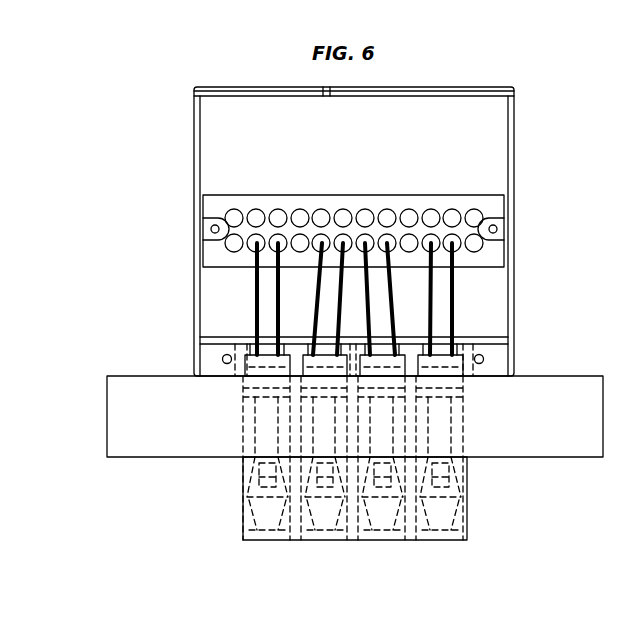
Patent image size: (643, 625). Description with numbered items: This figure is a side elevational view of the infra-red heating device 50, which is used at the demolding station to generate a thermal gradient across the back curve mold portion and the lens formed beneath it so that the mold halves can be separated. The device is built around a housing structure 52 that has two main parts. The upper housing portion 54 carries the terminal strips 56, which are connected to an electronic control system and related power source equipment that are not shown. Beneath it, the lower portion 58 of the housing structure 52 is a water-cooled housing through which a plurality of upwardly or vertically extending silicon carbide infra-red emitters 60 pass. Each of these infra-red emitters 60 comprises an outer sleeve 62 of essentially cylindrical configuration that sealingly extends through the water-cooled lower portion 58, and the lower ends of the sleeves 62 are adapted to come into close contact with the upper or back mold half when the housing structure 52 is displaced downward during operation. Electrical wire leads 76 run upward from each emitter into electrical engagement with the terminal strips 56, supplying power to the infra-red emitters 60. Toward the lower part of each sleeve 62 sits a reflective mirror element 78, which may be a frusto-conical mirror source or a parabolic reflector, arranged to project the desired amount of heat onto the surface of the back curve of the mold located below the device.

The infra-red heating device 50 is at (482, 78).
The housing structure 52 is at (514, 270).
The upper housing portion 54 is at (226, 87).
The terminal strips 56 is at (226, 244).
The lower portion 58 is at (108, 376).
The silicon carbide infra-red emitters 60 is at (243, 446).
The outer sleeve 62 is at (243, 420).
The electrical wire leads 76 is at (254, 305).
The reflective mirror element 78 is at (240, 520).